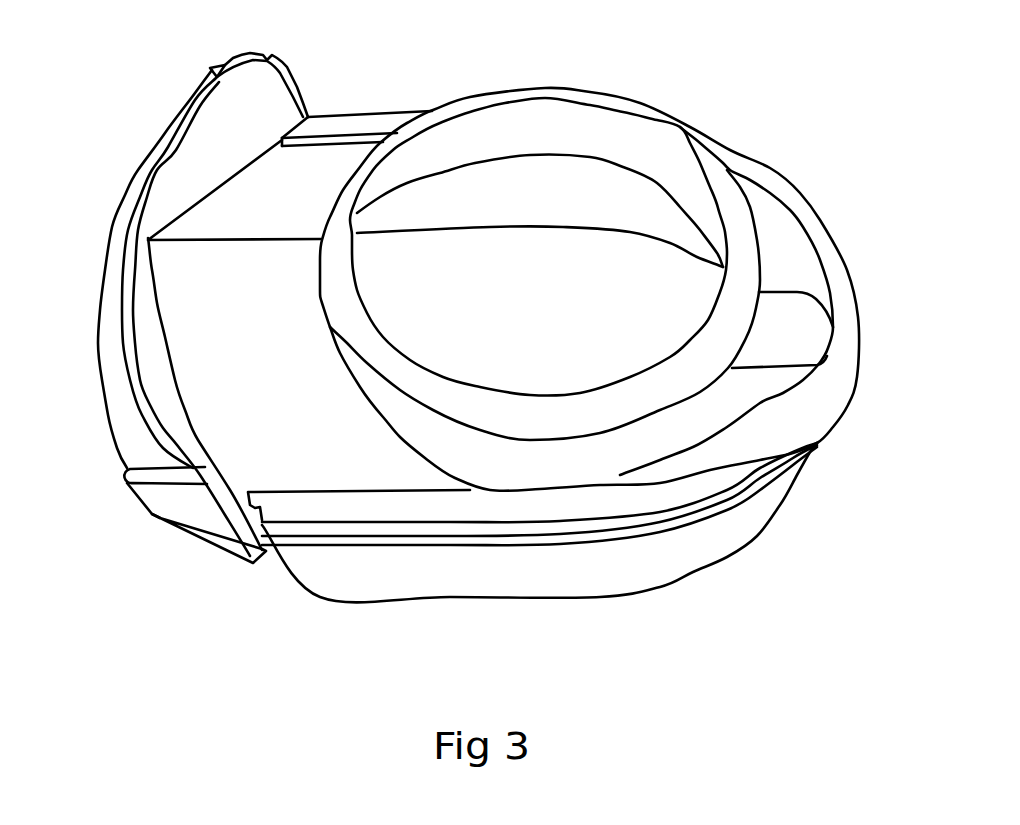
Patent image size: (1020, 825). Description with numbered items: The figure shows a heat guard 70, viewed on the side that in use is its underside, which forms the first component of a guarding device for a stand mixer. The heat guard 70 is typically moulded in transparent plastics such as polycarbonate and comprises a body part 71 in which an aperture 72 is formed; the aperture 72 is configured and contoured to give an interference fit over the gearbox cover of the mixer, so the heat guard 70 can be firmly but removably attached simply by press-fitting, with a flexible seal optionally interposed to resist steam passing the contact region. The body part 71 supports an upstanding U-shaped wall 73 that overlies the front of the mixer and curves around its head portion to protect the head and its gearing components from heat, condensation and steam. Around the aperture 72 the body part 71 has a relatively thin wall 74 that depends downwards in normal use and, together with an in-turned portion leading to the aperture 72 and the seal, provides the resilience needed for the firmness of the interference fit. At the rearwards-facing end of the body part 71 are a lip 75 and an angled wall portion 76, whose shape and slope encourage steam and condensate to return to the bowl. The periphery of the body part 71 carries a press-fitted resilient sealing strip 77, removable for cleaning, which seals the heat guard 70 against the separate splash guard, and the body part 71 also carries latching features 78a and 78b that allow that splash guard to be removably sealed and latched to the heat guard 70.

The heat guard 70 is at (477, 357).
The body part 71 is at (722, 426).
The aperture 72 is at (672, 348).
The U-shaped wall 73 is at (600, 572).
The thin wall 74 is at (677, 410).
The lip 75 is at (138, 220).
The angled wall portion 76 is at (157, 335).
The resilient sealing strip 77 is at (530, 505).
The latching feature 78a is at (265, 53).
The latching feature 78b is at (153, 512).